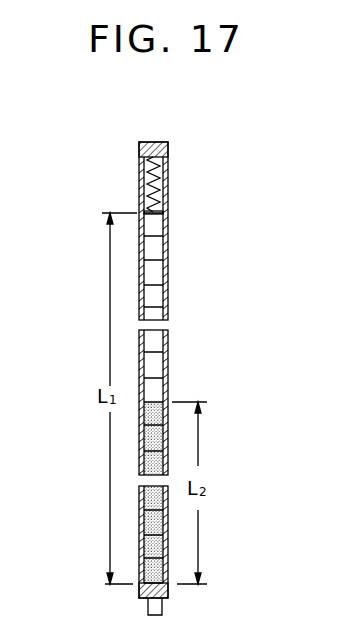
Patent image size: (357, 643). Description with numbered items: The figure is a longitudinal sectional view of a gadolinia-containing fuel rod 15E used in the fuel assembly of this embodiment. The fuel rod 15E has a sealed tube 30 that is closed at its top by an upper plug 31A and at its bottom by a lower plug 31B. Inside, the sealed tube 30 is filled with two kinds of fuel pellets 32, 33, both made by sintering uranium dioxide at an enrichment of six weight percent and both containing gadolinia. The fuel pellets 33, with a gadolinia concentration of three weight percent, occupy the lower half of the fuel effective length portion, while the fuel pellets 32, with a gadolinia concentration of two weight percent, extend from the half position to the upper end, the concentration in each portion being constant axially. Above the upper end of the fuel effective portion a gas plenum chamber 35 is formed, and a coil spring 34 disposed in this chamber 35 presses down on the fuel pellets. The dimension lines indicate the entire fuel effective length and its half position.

The fuel rod 15E is at (133, 175).
The sealed tube 30 is at (168, 291).
The upper plug 31A is at (148, 142).
The lower plug 31B is at (163, 604).
The fuel pellets 32 is at (155, 367).
The fuel pellets 33 is at (150, 527).
The coil spring 34 is at (157, 167).
The gas plenum chamber 35 is at (158, 200).